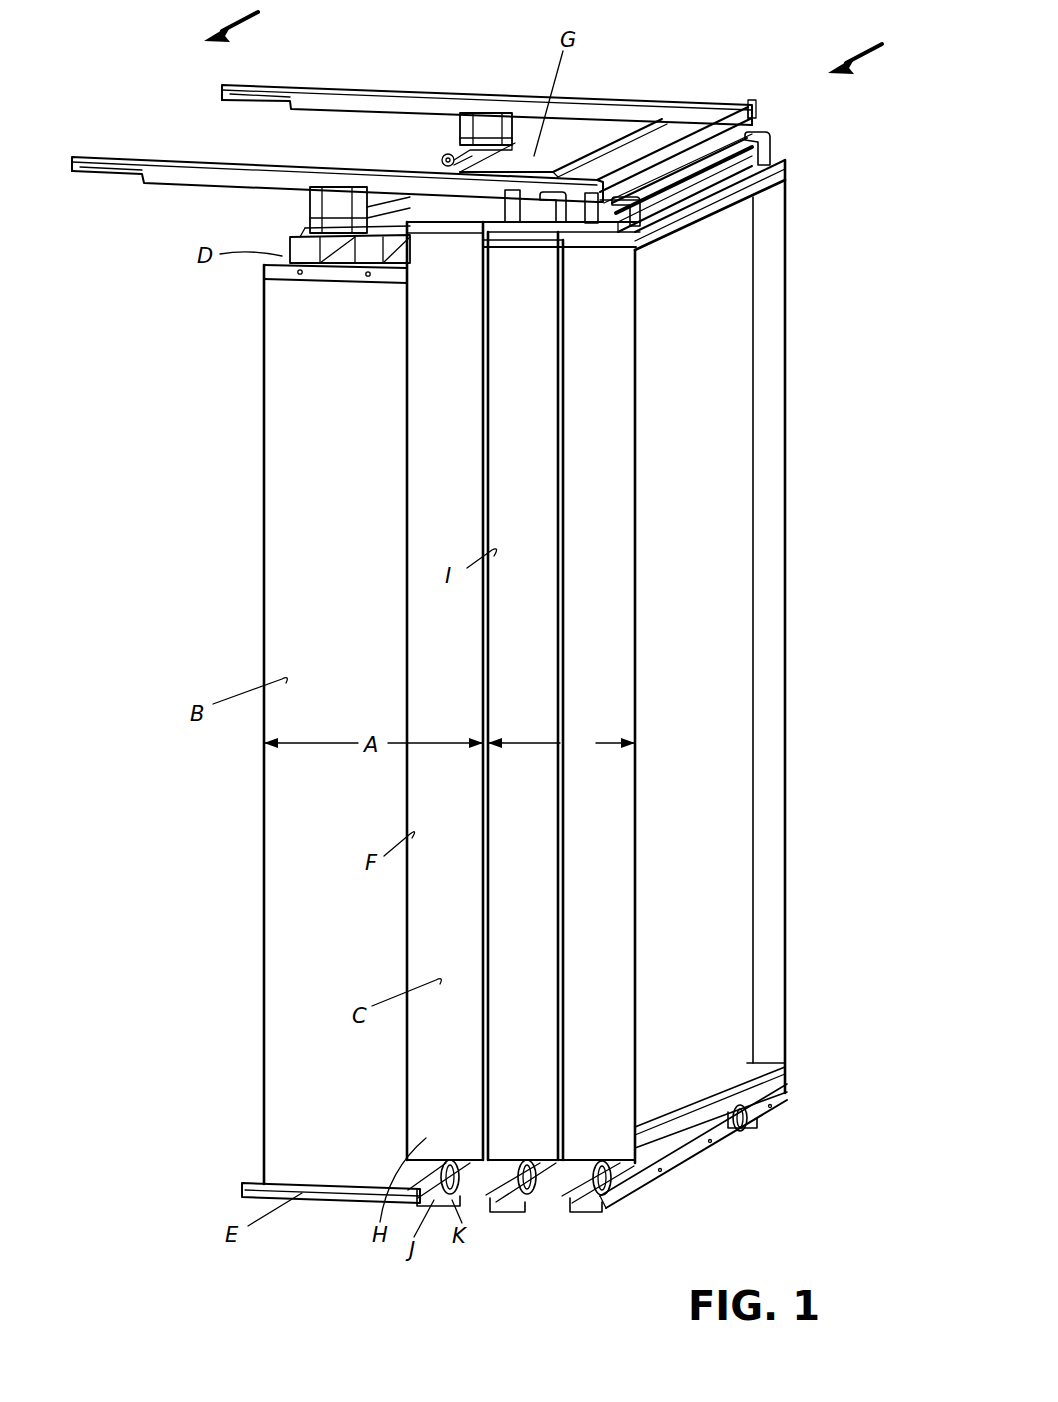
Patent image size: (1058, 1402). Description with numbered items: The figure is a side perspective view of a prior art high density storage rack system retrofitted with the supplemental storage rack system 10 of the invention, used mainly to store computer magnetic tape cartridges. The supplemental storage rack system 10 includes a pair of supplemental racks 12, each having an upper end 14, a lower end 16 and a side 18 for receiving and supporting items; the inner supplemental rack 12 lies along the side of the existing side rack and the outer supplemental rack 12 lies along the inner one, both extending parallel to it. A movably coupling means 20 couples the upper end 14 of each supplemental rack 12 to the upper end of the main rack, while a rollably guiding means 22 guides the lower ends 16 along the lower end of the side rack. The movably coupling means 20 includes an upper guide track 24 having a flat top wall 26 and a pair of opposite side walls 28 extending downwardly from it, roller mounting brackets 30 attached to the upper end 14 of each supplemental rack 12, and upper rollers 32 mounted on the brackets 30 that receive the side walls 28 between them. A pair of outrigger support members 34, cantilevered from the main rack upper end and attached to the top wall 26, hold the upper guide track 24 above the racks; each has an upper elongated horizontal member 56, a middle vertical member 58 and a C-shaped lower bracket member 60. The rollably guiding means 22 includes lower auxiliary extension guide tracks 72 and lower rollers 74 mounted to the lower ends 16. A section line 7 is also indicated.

The section line 7 is at (553, 38).
The supplemental storage rack system 10 is at (646, 80).
The supplemental rack 12 is at (538, 616).
The upper end 14 is at (583, 238).
The lower end 16 is at (497, 1160).
The side 18 is at (778, 277).
The movably coupling means 20 is at (760, 90).
The rollably guiding means 22 is at (557, 1225).
The upper guide track 24 is at (678, 128).
The top wall 26 is at (638, 148).
The side wall 28 is at (677, 168).
The roller mounting bracket 30 is at (772, 139).
The upper roller 32 is at (622, 197).
The outrigger support member 34 is at (375, 80).
The upper elongated horizontal member 56 is at (328, 85).
The middle vertical member 58 is at (508, 126).
The lower bracket member 60 is at (468, 153).
The lower auxiliary extension guide track 72 is at (527, 1204).
The lower roller 74 is at (521, 1165).